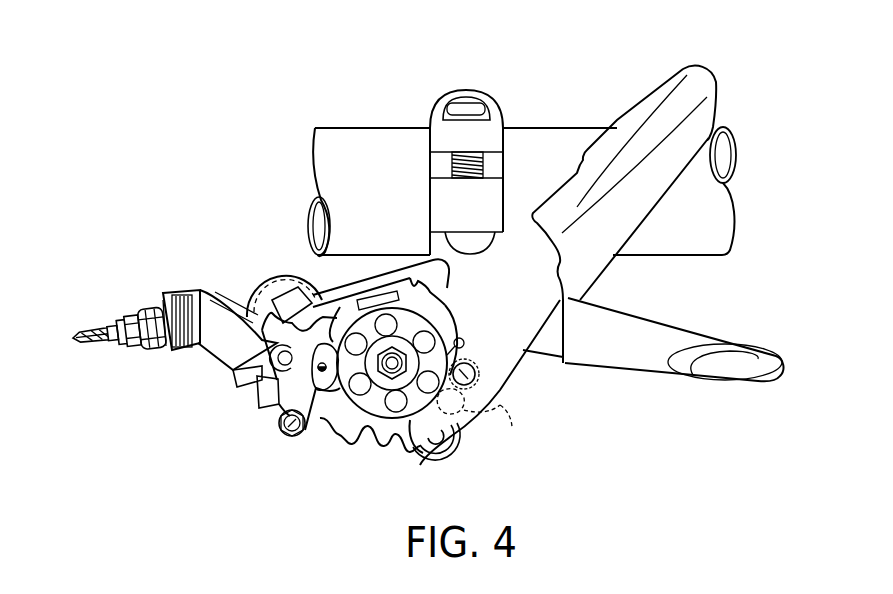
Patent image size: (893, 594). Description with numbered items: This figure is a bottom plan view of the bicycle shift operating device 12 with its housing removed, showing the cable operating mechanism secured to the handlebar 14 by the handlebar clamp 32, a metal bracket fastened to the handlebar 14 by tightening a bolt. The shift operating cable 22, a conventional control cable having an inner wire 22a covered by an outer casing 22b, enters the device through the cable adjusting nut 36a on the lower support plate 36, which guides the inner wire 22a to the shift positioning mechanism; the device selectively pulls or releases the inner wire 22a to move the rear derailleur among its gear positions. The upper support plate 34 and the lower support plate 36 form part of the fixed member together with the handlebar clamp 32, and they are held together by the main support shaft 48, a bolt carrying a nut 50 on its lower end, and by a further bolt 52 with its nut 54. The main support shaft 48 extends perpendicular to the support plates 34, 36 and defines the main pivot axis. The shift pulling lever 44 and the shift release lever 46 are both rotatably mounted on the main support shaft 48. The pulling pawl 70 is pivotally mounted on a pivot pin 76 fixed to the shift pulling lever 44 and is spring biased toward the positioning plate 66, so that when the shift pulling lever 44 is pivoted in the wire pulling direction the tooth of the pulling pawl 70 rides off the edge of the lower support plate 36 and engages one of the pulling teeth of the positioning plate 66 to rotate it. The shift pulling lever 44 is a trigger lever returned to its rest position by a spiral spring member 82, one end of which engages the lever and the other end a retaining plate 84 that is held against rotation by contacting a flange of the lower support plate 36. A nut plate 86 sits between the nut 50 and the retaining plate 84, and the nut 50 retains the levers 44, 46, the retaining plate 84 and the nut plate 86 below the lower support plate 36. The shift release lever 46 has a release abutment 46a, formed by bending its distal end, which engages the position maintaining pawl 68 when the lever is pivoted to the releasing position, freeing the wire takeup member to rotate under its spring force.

The bicycle shift operating device 12 is at (218, 432).
The handlebar 14 is at (332, 128).
The shift operating cable 22 is at (121, 284).
The inner wire 22a is at (80, 330).
The outer casing 22b is at (108, 326).
The handlebar clamp 32 is at (430, 107).
The upper support plate 34 is at (190, 287).
The lower support plate 36 is at (228, 364).
The cable adjusting nut 36a is at (145, 348).
The shift pulling lever 44 is at (703, 65).
The shift release lever 46 is at (684, 380).
The release abutment 46a is at (303, 278).
The main support shaft 48 is at (392, 365).
The nut 50 is at (400, 385).
The bolt 52 is at (280, 440).
The nut 54 is at (300, 438).
The positioning plate 66 is at (336, 446).
The position maintaining pawl 68 is at (260, 403).
The pulling pawl 70 is at (485, 418).
The pivot pin 76 is at (468, 378).
The spring member 82 is at (455, 358).
The retaining plate 84 is at (458, 428).
The nut plate 86 is at (463, 340).